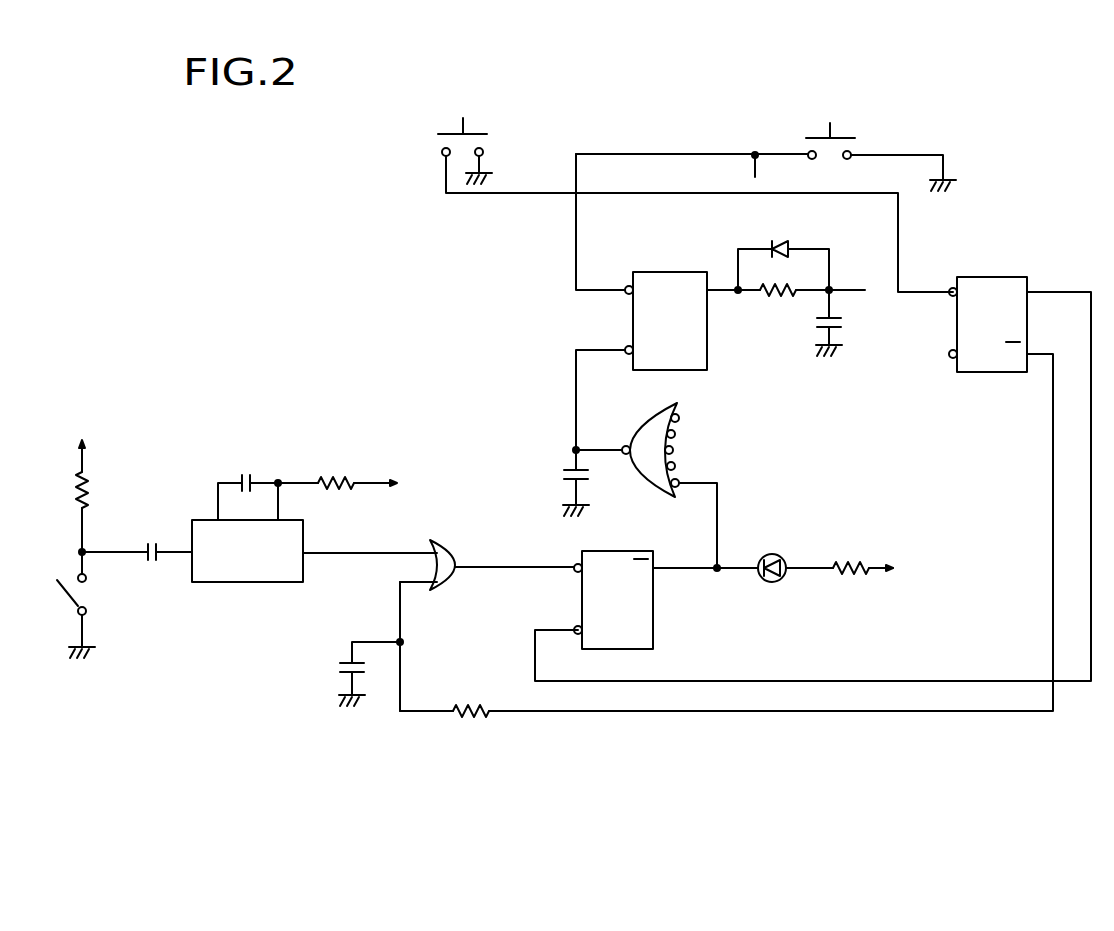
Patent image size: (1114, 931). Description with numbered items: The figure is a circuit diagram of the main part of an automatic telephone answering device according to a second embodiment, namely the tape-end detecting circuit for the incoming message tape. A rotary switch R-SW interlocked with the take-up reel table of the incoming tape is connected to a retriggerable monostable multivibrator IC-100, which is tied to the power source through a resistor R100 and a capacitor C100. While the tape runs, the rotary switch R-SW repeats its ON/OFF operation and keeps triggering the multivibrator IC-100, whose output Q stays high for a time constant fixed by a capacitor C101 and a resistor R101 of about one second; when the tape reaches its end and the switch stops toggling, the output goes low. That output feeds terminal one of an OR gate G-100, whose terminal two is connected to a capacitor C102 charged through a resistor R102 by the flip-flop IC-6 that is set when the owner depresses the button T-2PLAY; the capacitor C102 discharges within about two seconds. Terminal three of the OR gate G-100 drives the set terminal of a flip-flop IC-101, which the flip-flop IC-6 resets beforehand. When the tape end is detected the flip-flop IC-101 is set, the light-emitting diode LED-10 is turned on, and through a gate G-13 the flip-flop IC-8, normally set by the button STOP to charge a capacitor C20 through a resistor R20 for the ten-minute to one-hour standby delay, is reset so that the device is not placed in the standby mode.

The button T-2PLAY is at (683, 191).
The button STOP is at (766, 143).
The flip-flop IC-8 is at (641, 312).
The resistor R20 is at (786, 282).
The capacitor C20 is at (849, 323).
The flip-flop IC-6 is at (790, 494).
The gate G-13 is at (640, 474).
The flip-flop IC-101 is at (666, 600).
The light-emitting diode LED-10 is at (835, 560).
The OR gate G-100 is at (438, 565).
The capacitor C102 is at (345, 646).
The resistor R102 is at (444, 697).
The retriggerable monostable multivibrator IC-100 is at (247, 551).
The capacitor C101 is at (249, 485).
The resistor R101 is at (352, 472).
The resistor R100 is at (104, 485).
The capacitor C100 is at (137, 539).
The rotary switch R-SW is at (108, 605).